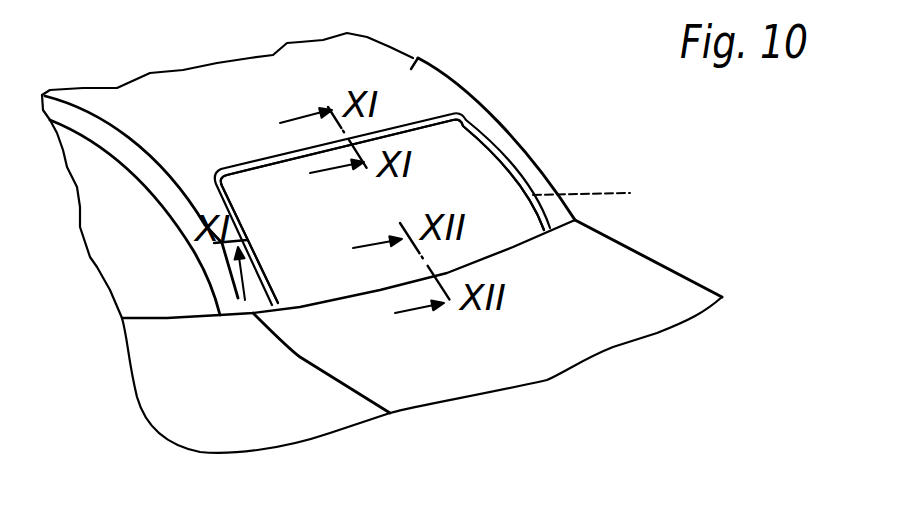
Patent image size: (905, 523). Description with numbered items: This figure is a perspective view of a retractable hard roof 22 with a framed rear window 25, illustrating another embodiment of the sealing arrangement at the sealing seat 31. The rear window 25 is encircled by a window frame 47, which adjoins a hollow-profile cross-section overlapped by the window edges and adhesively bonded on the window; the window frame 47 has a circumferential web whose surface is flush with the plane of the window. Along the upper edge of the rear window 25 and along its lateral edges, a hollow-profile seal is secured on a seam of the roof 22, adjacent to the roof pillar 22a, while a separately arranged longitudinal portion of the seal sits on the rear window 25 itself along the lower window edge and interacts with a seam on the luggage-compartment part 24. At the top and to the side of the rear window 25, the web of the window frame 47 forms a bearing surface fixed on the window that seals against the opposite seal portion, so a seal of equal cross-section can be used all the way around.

The roof 22 is at (418, 58).
The roof pillar 22a is at (220, 260).
The luggage-compartment part 24 is at (673, 293).
The rear window 25 is at (463, 153).
The sealing seat 31 is at (598, 192).
The window frame 47 is at (263, 160).